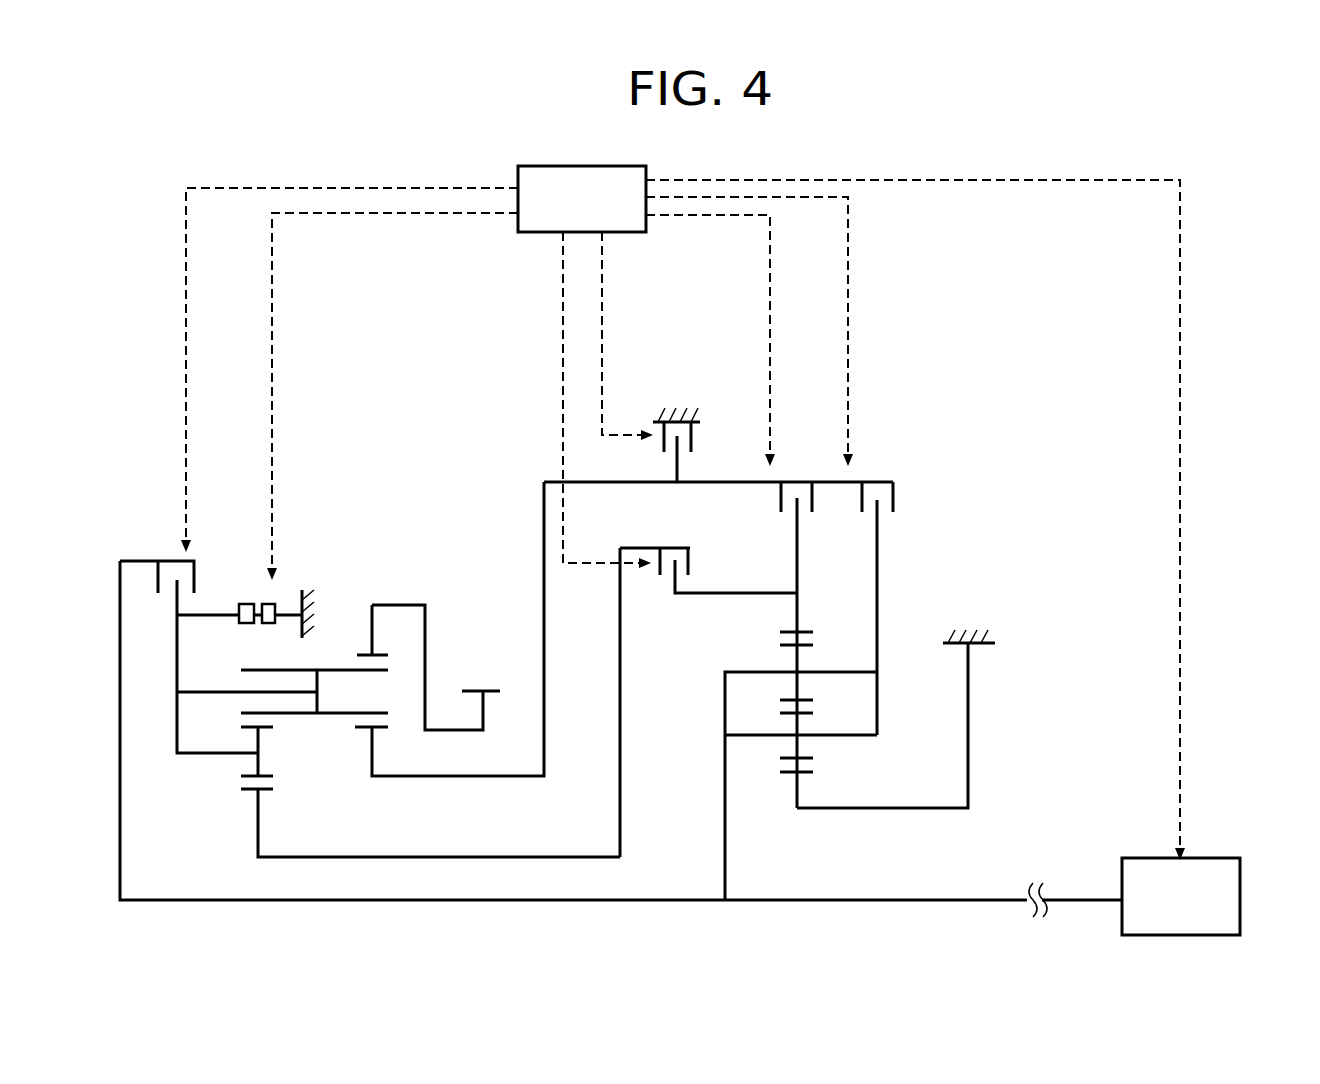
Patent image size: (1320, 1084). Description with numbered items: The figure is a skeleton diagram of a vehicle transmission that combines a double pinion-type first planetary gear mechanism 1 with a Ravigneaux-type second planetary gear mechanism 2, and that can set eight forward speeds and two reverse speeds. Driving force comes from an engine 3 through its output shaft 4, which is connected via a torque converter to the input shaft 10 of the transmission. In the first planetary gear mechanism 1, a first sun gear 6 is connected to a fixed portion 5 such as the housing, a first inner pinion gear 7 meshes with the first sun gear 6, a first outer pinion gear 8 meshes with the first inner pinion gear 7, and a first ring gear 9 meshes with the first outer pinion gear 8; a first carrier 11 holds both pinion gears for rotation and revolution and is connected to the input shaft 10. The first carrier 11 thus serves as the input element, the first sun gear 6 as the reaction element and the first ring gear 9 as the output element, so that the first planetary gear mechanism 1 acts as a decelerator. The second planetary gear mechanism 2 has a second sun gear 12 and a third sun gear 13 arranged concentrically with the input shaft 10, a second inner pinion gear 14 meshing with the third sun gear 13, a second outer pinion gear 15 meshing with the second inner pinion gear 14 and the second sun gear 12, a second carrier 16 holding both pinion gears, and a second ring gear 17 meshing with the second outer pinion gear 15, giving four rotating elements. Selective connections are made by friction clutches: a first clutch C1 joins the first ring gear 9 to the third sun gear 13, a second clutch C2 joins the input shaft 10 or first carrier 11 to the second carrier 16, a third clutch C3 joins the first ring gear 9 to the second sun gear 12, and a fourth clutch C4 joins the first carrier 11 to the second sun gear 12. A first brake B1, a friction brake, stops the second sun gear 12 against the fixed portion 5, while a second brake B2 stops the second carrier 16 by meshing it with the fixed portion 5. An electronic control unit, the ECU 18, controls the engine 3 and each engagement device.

The first planetary gear mechanism 1 is at (930, 528).
The second planetary gear mechanism 2 is at (333, 510).
The engine 3 is at (1240, 893).
The output shaft 4 is at (1088, 900).
The fixed portion 5 is at (314, 596).
The first sun gear 6 is at (803, 775).
The first inner pinion gear 7 is at (797, 748).
The first outer pinion gear 8 is at (797, 658).
The first ring gear 9 is at (797, 614).
The input shaft 10 is at (890, 902).
The first carrier 11 is at (725, 770).
The second sun gear 12 is at (362, 731).
The third sun gear 13 is at (250, 791).
The second inner pinion gear 14 is at (259, 742).
The second outer pinion gear 15 is at (330, 667).
The second carrier 16 is at (177, 733).
The second ring gear 17 is at (381, 656).
The electronic control unit 18 is at (537, 233).
The first brake B1 is at (706, 410).
The second brake B2 is at (251, 585).
The first clutch C1 is at (655, 586).
The second clutch C2 is at (171, 547).
The third clutch C3 is at (790, 468).
The fourth clutch C4 is at (866, 468).